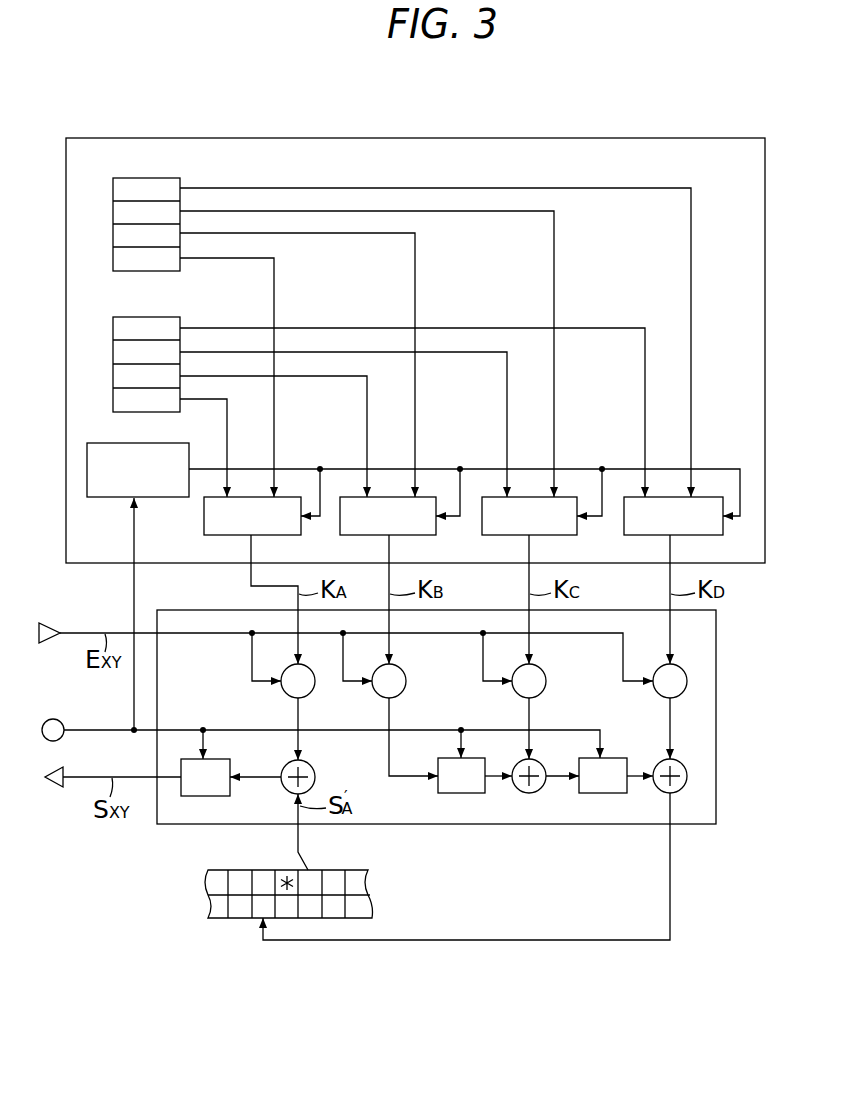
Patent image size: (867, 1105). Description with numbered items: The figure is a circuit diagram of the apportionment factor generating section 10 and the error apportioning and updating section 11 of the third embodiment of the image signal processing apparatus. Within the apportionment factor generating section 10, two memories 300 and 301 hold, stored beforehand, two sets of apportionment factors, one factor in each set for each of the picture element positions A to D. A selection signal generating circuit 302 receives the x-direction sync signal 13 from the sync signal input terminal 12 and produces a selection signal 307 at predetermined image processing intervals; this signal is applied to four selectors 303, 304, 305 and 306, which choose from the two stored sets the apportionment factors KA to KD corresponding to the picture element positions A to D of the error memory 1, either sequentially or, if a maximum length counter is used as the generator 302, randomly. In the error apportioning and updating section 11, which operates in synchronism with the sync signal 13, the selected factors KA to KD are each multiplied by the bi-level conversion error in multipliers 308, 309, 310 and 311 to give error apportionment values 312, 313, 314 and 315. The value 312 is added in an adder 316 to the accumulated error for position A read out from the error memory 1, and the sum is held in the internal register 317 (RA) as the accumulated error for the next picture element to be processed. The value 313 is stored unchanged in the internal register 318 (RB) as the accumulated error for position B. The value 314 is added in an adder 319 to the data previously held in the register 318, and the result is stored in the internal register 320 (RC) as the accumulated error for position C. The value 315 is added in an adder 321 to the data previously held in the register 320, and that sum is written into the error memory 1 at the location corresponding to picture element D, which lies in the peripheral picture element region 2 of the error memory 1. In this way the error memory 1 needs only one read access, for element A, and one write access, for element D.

The error memory 1 is at (357, 870).
The peripheral picture element region 2 is at (322, 905).
The apportionment factor generating section 10 is at (428, 138).
The error apportioning and updating section 11 is at (178, 825).
The sync signal input terminal 12 is at (60, 722).
The x-direction sync signal 13 is at (136, 596).
The memory 300 is at (118, 317).
The memory 301 is at (118, 178).
The selection signal generating circuit 302 is at (150, 443).
The selector 303 is at (229, 537).
The selector 304 is at (360, 537).
The selector 305 is at (495, 537).
The selector 306 is at (638, 537).
The selection signal 307 is at (290, 469).
The multiplier 308 is at (310, 694).
The multiplier 309 is at (402, 670).
The multiplier 310 is at (542, 670).
The multiplier 311 is at (661, 668).
The error apportionment value 312 is at (298, 710).
The error apportionment value 313 is at (389, 714).
The error apportionment value 314 is at (529, 714).
The error apportionment value 315 is at (670, 722).
The adder 316 is at (312, 766).
The internal register 317 is at (205, 797).
The internal register 318 is at (455, 794).
The adder 319 is at (518, 766).
The internal register 320 is at (590, 794).
The adder 321 is at (679, 762).